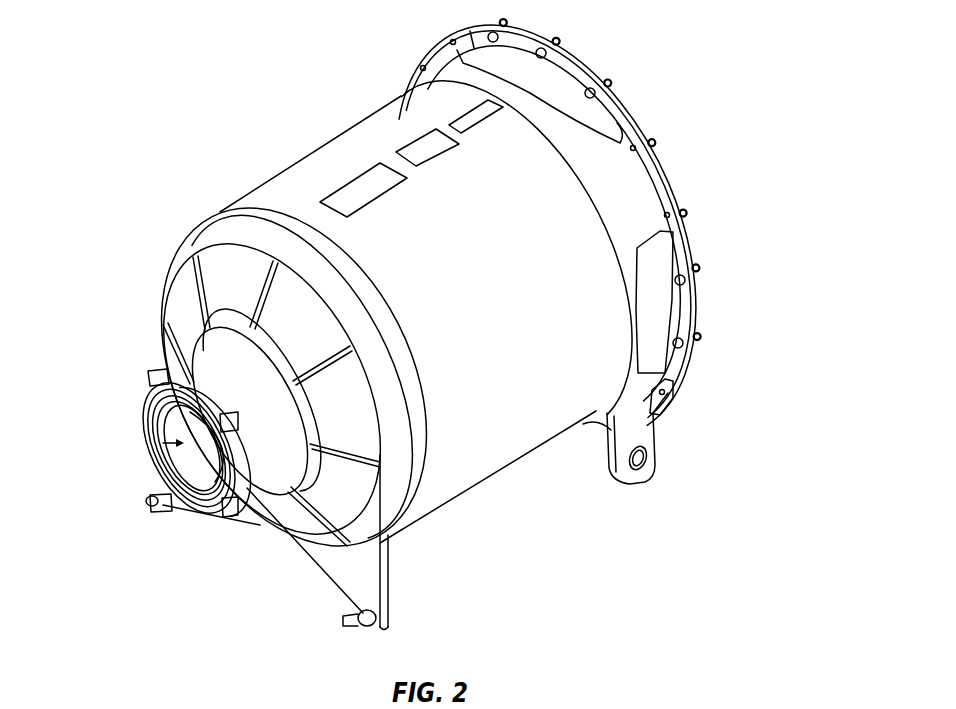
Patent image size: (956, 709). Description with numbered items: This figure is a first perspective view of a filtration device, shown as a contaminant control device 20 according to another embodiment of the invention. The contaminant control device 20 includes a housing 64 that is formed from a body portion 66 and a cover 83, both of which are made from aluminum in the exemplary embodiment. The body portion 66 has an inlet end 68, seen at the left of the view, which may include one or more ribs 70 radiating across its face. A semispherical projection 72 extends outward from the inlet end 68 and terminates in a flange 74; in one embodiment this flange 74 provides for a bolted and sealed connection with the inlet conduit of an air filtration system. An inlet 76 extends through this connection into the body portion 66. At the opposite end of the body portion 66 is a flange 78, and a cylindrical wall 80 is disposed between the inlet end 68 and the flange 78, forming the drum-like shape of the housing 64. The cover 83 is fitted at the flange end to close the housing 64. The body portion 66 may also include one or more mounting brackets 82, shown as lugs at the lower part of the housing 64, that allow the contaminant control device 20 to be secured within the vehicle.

The contaminant control device 20 is at (236, 96).
The housing 64 is at (592, 508).
The body portion 66 is at (327, 150).
The inlet end 68 is at (224, 268).
The ribs 70 is at (196, 306).
The semispherical projection 72 is at (273, 478).
The flange 74 is at (143, 430).
The inlet 76 is at (160, 453).
The flange 78 is at (688, 310).
The cylindrical wall 80 is at (480, 491).
The mounting brackets 82 is at (641, 427).
The cover 83 is at (662, 180).